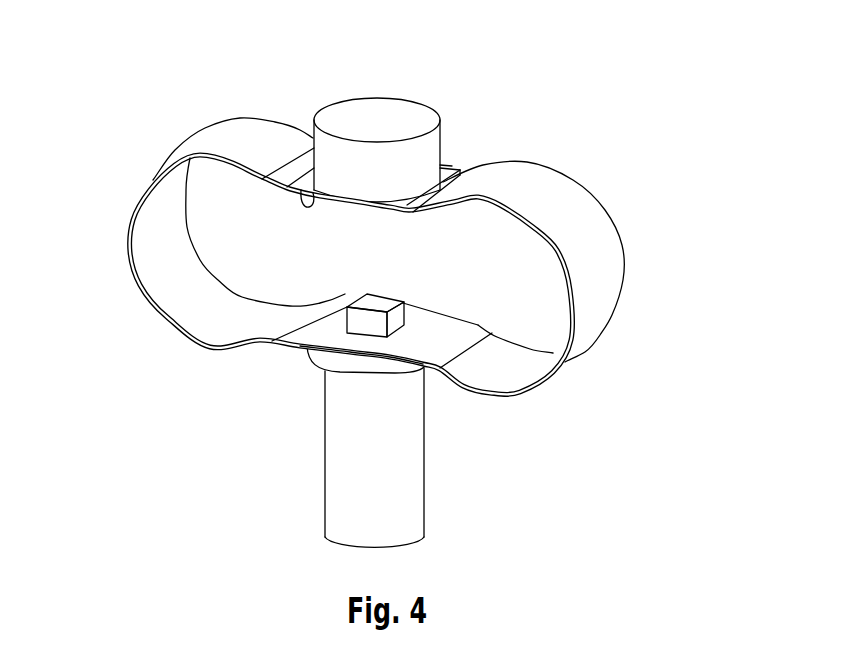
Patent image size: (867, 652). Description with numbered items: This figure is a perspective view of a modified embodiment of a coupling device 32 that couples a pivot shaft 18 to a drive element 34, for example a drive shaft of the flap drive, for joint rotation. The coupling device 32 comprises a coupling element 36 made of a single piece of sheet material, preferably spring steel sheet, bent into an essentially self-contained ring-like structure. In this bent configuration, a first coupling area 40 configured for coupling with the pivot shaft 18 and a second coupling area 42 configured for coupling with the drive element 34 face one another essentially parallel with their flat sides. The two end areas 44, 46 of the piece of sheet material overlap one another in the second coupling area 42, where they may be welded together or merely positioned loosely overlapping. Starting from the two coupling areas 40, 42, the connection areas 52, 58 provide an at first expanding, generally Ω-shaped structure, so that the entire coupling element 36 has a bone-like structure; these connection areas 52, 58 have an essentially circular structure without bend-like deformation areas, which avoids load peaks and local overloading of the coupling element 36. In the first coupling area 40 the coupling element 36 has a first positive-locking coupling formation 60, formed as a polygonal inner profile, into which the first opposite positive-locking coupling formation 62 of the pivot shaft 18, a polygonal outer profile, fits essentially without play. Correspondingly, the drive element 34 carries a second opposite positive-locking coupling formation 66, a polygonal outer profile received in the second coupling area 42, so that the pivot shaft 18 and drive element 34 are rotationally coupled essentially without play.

The pivot shaft 18 is at (427, 515).
The coupling device 32 is at (395, 290).
The drive element 34 is at (407, 98).
The coupling element 36 is at (204, 373).
The first coupling area 40 is at (288, 376).
The second coupling area 42 is at (469, 137).
The end area 44 is at (301, 190).
The end area 46 is at (450, 166).
The connection area 52 is at (128, 262).
The connection area 58 is at (623, 257).
The first positive-locking coupling formation 60 is at (416, 338).
The first opposite positive-locking coupling formation 62 is at (411, 291).
The second opposite positive-locking coupling formation 66 is at (323, 228).